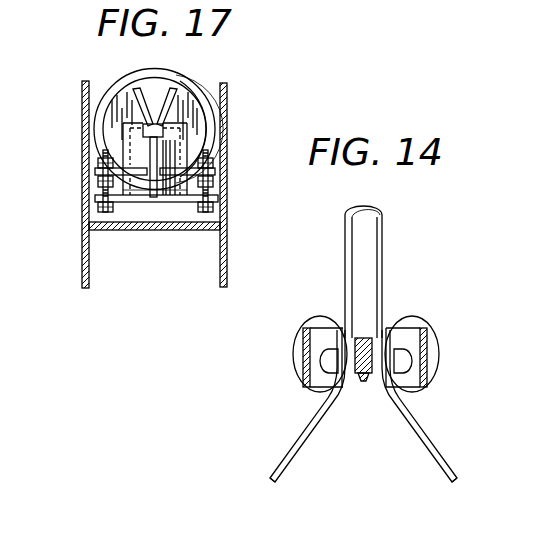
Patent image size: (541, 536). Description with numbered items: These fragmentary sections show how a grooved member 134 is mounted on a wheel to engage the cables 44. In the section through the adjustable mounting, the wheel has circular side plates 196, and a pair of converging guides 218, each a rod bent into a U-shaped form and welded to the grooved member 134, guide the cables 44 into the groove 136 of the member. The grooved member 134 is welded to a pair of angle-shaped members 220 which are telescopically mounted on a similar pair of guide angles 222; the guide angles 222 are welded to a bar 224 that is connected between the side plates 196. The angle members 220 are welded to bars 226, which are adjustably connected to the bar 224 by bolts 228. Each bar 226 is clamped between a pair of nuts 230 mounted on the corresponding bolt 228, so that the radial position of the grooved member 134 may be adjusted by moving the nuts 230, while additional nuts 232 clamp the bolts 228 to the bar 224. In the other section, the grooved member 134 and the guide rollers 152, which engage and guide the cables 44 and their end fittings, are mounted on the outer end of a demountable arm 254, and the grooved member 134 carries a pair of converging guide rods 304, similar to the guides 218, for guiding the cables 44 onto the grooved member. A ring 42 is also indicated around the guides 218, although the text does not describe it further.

In FIG. 17, the ring 42 is at (130, 74).
In FIG. 14, the cables 44 is at (370, 383).
In FIG. 17, the grooved member 134 is at (143, 130).
In FIG. 14, the grooved member 134 is at (364, 337).
In FIG. 17, the groove 136 is at (158, 124).
In FIG. 14, the groove 136 is at (358, 383).
In FIG. 14, the guide roller 152 is at (296, 355).
In FIG. 17, the side plate 196 is at (82, 265).
In FIG. 17, the converging guide 218 is at (135, 108).
In FIG. 17, the angle-shaped member 220 is at (125, 140).
In FIG. 17, the guide angle 222 is at (162, 200).
In FIG. 17, the bar 224 is at (185, 205).
In FIG. 17, the bar 226 is at (97, 170).
In FIG. 17, the bolt 228 is at (98, 184).
In FIG. 17, the nut 230 is at (212, 162).
In FIG. 17, the additional nut 232 is at (95, 200).
In FIG. 14, the demountable arm 254 is at (383, 252).
In FIG. 14, the guide rod 304 is at (442, 467).